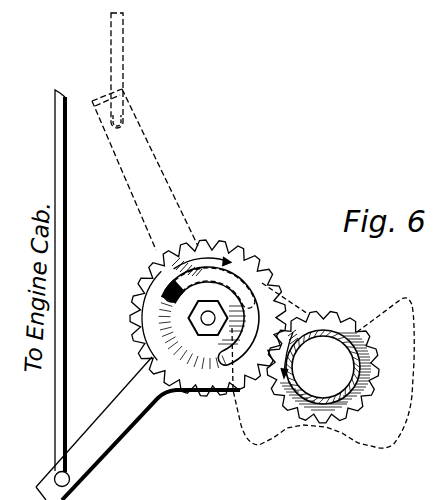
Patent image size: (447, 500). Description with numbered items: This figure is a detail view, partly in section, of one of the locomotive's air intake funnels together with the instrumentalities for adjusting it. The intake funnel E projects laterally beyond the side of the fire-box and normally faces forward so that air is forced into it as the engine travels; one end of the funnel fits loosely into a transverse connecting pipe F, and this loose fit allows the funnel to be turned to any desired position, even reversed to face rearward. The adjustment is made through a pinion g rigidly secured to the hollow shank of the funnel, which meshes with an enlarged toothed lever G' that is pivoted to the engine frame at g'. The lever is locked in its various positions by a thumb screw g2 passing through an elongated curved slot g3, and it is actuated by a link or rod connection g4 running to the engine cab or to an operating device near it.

The link or rod connection g4 is at (63, 213).
The lever arm G' is at (138, 256).
The pivot g' is at (209, 318).
The thumb screw g2 is at (166, 296).
The elongated curved slot g3 is at (172, 335).
The pinion g is at (332, 367).
The intake funnel E is at (367, 401).
The transverse connecting pipe F is at (320, 490).